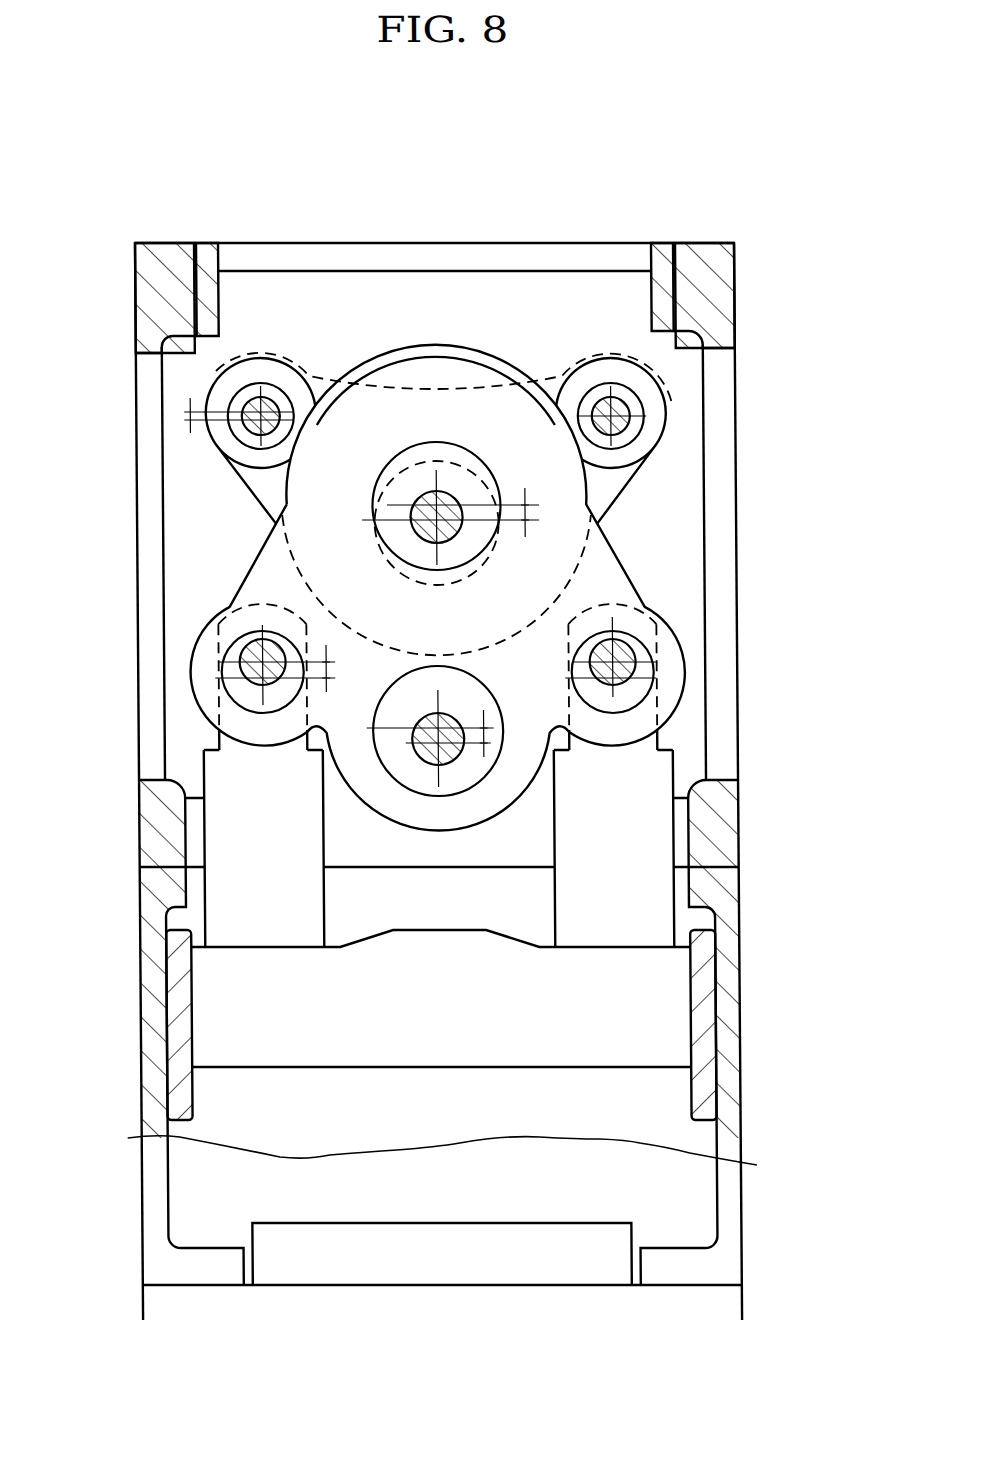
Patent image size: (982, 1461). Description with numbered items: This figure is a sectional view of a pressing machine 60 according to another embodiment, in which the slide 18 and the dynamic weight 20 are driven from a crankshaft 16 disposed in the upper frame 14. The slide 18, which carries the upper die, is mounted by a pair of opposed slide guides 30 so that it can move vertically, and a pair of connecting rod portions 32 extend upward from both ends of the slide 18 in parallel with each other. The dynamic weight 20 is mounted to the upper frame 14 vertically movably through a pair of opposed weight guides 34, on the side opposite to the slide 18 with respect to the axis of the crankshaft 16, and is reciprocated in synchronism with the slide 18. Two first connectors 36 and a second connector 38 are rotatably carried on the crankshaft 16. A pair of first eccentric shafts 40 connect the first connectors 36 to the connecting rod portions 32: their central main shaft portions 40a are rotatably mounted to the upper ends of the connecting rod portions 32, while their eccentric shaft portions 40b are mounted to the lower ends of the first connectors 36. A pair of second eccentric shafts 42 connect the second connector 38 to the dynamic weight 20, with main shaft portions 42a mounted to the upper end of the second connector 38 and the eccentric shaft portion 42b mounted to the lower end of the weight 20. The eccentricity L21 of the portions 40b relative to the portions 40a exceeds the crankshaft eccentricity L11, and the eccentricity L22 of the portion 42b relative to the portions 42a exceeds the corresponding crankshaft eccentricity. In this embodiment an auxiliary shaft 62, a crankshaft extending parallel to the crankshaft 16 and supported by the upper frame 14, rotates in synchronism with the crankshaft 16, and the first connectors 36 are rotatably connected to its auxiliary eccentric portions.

The upper frame 14 is at (736, 300).
The crankshaft 16 is at (412, 525).
The slide 18 is at (423, 1057).
The dynamic weight 20 is at (485, 271).
The slide guides 30 is at (185, 1090).
The connecting rod portions 32 is at (272, 938).
The weight guides 34 is at (206, 243).
The first connectors 36 is at (259, 547).
The second connector 38 is at (250, 480).
The first eccentric shafts 40 is at (233, 645).
The main shaft portions 40a is at (624, 640).
The eccentric shaft portions 40b is at (636, 690).
The second eccentric shafts 42 is at (286, 386).
The main shaft portions 42a is at (627, 408).
The eccentric shaft portion 42b is at (588, 398).
The pressing machine 60 is at (619, 230).
The auxiliary shaft 62 is at (404, 776).
The amount of eccentricity L11 is at (527, 508).
The amount of eccentricity L21 is at (326, 664).
The amount of eccentricity L22 is at (183, 416).